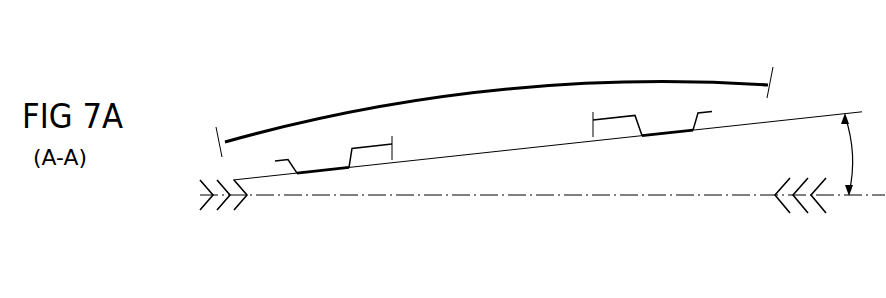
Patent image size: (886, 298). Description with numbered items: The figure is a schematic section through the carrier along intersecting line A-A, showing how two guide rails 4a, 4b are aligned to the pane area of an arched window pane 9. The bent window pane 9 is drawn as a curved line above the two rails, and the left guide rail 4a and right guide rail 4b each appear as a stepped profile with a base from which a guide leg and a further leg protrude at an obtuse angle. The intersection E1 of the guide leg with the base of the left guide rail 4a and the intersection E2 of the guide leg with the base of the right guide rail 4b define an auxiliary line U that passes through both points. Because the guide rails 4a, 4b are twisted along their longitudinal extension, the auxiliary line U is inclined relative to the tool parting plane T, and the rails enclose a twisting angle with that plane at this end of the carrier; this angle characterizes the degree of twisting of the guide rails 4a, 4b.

The window pane 9 is at (703, 80).
The left guide rail 4a is at (322, 172).
The right guide rail 4b is at (667, 133).
The intersection of guide leg with base of left guide rail E1 is at (297, 174).
The intersection of guide leg with base of right guide rail E2 is at (693, 130).
The auxiliary line U is at (833, 115).
The tool parting plane T is at (713, 200).